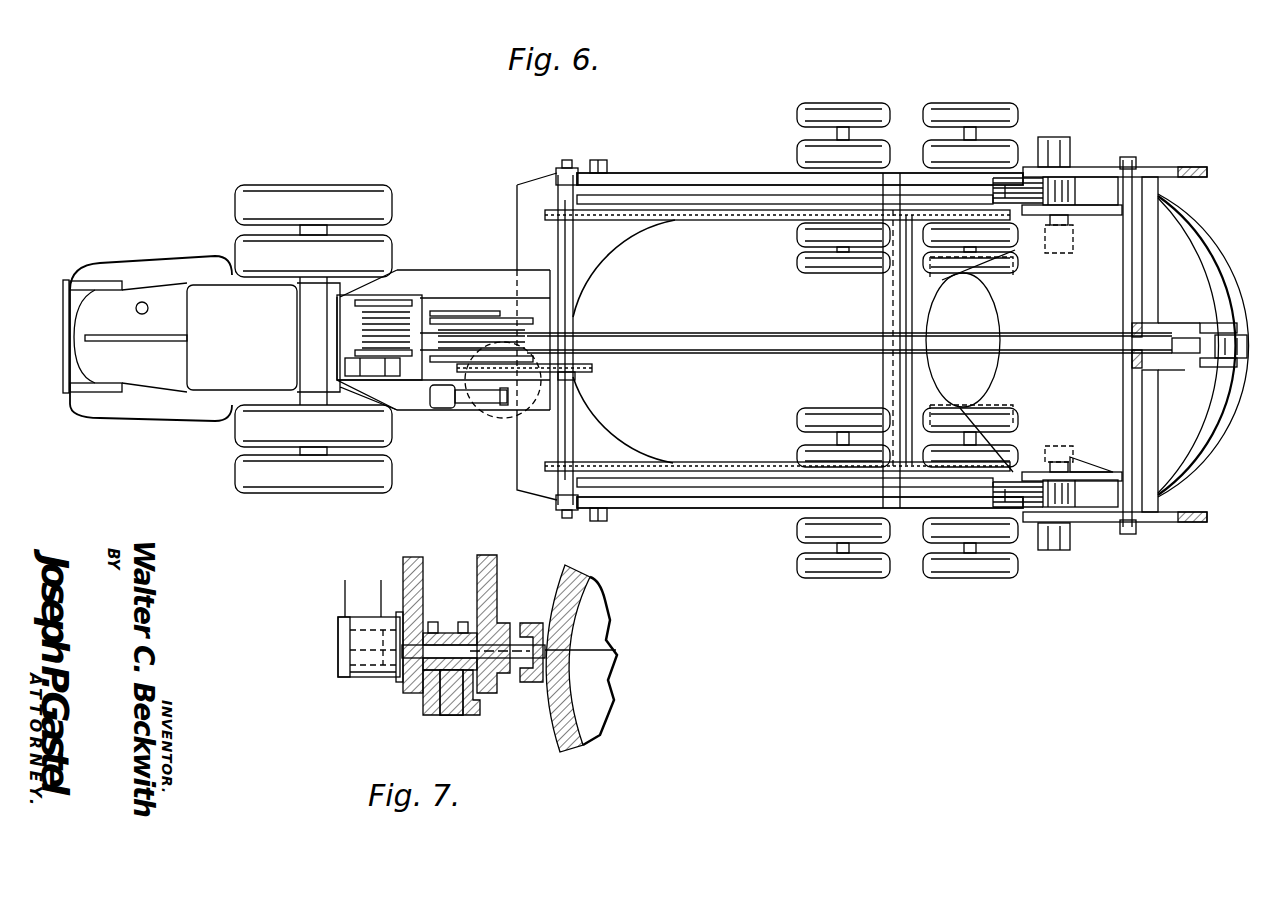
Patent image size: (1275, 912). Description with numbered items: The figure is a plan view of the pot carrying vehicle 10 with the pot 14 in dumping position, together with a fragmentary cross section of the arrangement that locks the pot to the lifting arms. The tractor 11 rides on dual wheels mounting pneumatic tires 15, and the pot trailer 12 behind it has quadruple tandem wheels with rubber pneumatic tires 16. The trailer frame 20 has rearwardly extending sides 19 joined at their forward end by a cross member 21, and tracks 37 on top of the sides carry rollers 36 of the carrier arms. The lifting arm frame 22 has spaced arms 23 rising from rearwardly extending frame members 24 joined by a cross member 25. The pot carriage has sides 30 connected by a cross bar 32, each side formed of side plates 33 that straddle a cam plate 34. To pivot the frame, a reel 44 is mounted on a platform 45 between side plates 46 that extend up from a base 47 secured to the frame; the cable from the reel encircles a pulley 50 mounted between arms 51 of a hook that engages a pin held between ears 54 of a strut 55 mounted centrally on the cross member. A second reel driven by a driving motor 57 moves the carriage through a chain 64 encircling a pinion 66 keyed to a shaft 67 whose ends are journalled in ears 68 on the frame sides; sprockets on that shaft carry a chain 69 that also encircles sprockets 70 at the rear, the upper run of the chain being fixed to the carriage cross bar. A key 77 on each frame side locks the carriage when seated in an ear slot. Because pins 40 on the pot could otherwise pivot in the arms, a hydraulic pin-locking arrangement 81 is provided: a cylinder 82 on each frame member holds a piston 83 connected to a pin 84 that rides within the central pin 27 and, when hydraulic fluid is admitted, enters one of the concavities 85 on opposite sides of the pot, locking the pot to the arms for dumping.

In FIG. 6, the vehicle 10 is at (1130, 95).
In FIG. 6, the tractor 11 is at (174, 262).
In FIG. 6, the pot trailer 12 is at (528, 185).
In FIG. 6, the pot 14 is at (1196, 442).
In FIG. 7, the pot 14 is at (582, 712).
In FIG. 6, the pneumatic tires 15 is at (328, 185).
In FIG. 6, the pneumatic tires 16 is at (824, 103).
In FIG. 6, the side of trailer frame 19 is at (782, 192).
In FIG. 6, the trailer frame 20 is at (522, 212).
In FIG. 6, the cross member 21 is at (520, 462).
In FIG. 6, the lifting arm frame 22 is at (1090, 522).
In FIG. 7, the lifting arm frame 22 is at (498, 574).
In FIG. 6, the arms 23 is at (1146, 167).
In FIG. 6, the frame members 24 is at (1078, 168).
In FIG. 7, the frame members 24 is at (400, 574).
In FIG. 6, the cross member 25 is at (1158, 262).
In FIG. 6, the central pin 27 is at (1080, 342).
In FIG. 7, the central pin 27 is at (484, 708).
In FIG. 6, the carriage sides 30 is at (984, 190).
In FIG. 7, the carriage sides 30 is at (420, 718).
In FIG. 6, the cross bar 32 is at (883, 292).
In FIG. 6, the side plate 33 is at (1010, 176).
In FIG. 7, the side plate 33 is at (434, 622).
In FIG. 6, the cam plate 34 is at (1032, 216).
In FIG. 7, the cam plate 34 is at (458, 714).
In FIG. 6, the rollers 36 is at (892, 178).
In FIG. 6, the tracks 37 is at (729, 176).
In FIG. 6, the pins 40 is at (1140, 162).
In FIG. 6, the reel 44 is at (386, 298).
In FIG. 6, the platform 45 is at (428, 318).
In FIG. 6, the side plates 46 is at (452, 296).
In FIG. 6, the base 47 is at (442, 410).
In FIG. 6, the pulley 50 is at (1210, 300).
In FIG. 6, the arms of hook 51 is at (1184, 324).
In FIG. 6, the ears 54 is at (1238, 324).
In FIG. 6, the strut 55 is at (1130, 318).
In FIG. 6, the driving motor 57 is at (444, 406).
In FIG. 6, the chain 64 is at (518, 414).
In FIG. 6, the pinion 66 is at (592, 370).
In FIG. 6, the shaft 67 is at (575, 274).
In FIG. 6, the ears 68 is at (562, 168).
In FIG. 6, the chain 69 is at (706, 220).
In FIG. 6, the sprockets 70 is at (940, 270).
In FIG. 6, the key 77 is at (606, 158).
In FIG. 7, the hydraulic pin-locking arrangement 81 is at (338, 650).
In FIG. 6, the cylinder 82 is at (1054, 136).
In FIG. 7, the cylinder 82 is at (360, 676).
In FIG. 7, the piston 83 is at (336, 668).
In FIG. 6, the pin 84 is at (1064, 252).
In FIG. 7, the pin 84 is at (448, 622).
In FIG. 6, the concavities 85 is at (1030, 244).
In FIG. 7, the concavities 85 is at (544, 651).